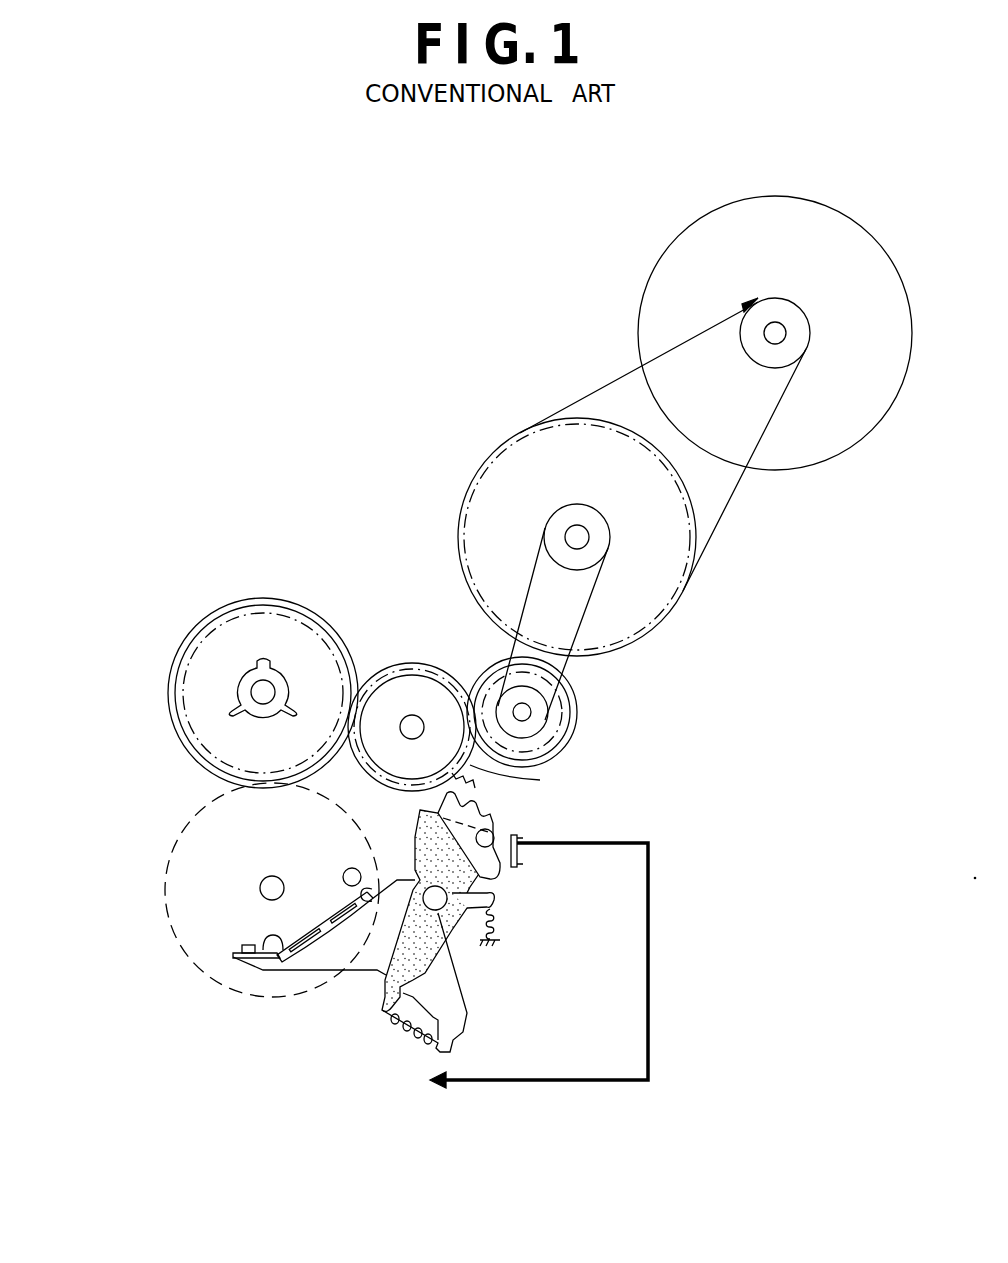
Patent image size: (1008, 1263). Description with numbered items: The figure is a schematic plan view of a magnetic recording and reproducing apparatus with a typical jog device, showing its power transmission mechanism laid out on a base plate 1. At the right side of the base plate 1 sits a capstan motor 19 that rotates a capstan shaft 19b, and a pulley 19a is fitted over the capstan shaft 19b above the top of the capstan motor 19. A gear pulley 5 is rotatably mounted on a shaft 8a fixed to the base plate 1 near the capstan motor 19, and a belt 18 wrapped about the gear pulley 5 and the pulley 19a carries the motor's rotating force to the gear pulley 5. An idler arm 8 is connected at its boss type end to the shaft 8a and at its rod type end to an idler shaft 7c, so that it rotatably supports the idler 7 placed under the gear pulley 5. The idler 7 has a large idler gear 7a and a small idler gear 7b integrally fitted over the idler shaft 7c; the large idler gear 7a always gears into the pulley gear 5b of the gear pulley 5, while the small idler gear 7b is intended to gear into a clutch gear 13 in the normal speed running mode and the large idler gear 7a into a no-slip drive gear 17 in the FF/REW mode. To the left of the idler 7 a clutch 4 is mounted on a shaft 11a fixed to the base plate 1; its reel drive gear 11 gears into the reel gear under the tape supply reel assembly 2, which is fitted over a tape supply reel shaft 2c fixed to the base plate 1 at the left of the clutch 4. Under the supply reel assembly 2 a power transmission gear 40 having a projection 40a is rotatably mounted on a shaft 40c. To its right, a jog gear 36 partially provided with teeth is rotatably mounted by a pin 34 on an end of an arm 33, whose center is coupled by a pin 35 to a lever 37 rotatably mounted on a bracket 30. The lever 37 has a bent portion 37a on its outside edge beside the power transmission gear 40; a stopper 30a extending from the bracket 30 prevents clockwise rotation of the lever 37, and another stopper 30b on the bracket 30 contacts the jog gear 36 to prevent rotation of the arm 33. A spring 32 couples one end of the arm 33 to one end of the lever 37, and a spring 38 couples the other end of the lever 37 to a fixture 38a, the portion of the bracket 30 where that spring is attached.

The base plate 1 is at (104, 747).
The tape supply reel assembly 2 is at (255, 623).
The tape supply reel shaft 2c is at (257, 695).
The clutch 4 is at (373, 658).
The gear pulley 5 is at (673, 610).
The pulley gear 5b is at (650, 640).
The idler 7 is at (584, 685).
The large idler gear 7a is at (578, 705).
The small idler gear 7b is at (573, 730).
The idler shaft 7c is at (573, 747).
The idler arm 8 is at (573, 533).
The shaft 8a is at (548, 573).
The reel drive gear 11 is at (403, 662).
The shaft 11a is at (416, 720).
The clutch gear 13 is at (427, 657).
The no-slip drive gear 17 is at (540, 780).
The belt 18 is at (620, 377).
The capstan motor 19 is at (720, 223).
The pulley 19a is at (762, 312).
The capstan shaft 19b is at (772, 337).
The bracket 30 is at (652, 1060).
The stopper 30a is at (260, 938).
The stopper 30b is at (520, 855).
The spring 32 is at (407, 1028).
The arm 33 is at (428, 948).
The pin 34 is at (492, 845).
The pin 35 is at (447, 907).
The jog gear 36 is at (545, 819).
The lever 37 is at (318, 953).
The bent portion 37a is at (233, 957).
The spring 38 is at (493, 918).
The fixture 38a is at (490, 942).
The power transmission gear 40 is at (168, 872).
The projection 40a is at (343, 873).
The shaft 40c is at (260, 880).